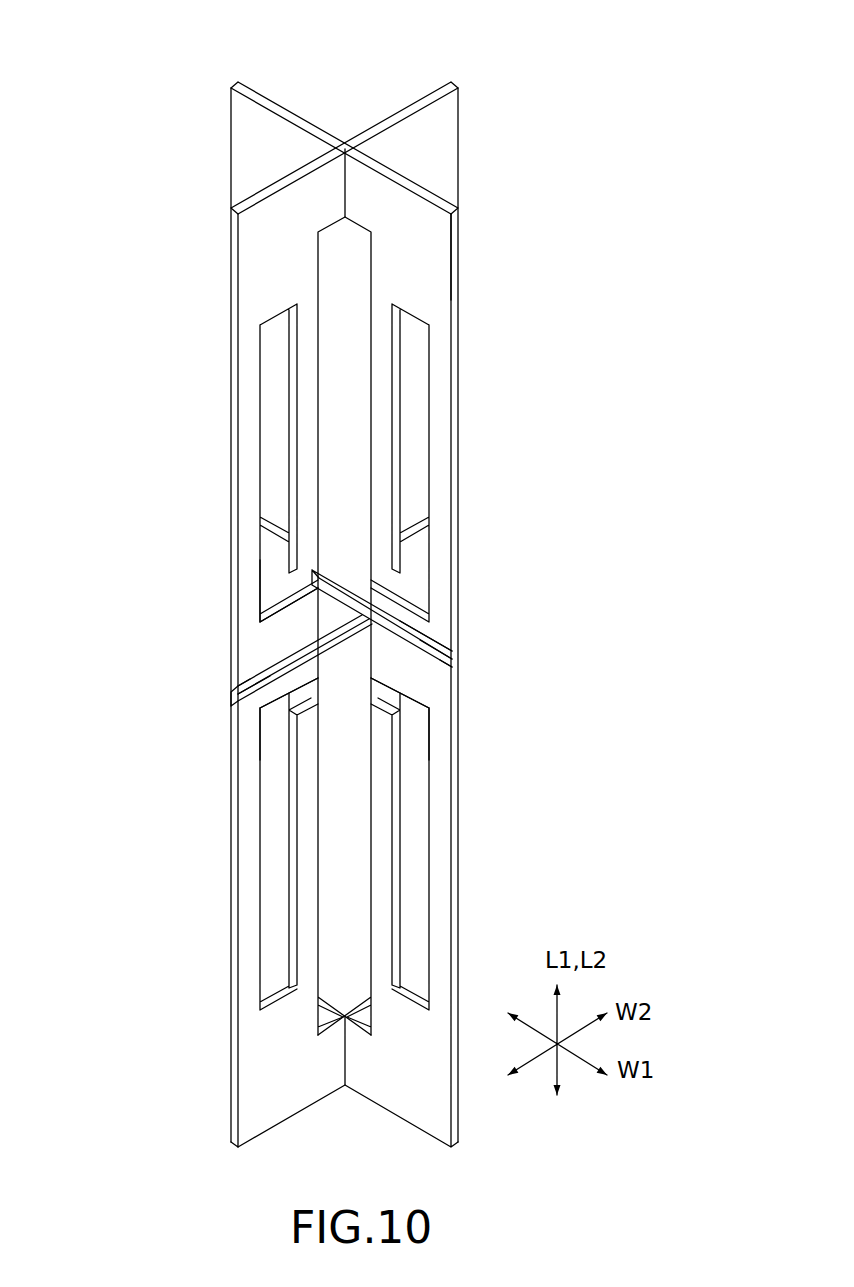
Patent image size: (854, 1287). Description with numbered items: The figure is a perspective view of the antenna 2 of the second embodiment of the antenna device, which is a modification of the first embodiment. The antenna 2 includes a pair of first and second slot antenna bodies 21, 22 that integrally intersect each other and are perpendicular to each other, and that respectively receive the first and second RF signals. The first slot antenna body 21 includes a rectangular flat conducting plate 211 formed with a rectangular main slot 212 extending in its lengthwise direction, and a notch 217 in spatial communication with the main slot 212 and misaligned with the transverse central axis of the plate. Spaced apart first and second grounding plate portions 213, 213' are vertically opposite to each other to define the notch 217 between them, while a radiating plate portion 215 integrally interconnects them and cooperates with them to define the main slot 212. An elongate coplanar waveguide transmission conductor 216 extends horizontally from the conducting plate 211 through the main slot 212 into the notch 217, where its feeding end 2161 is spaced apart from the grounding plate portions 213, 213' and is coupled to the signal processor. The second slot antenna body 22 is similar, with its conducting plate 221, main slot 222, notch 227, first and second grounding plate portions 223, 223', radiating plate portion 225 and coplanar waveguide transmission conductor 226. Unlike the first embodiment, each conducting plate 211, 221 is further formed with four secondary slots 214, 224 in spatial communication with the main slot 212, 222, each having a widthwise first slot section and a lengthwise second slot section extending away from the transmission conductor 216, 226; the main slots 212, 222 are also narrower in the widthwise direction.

The antenna 2 is at (176, 52).
The first slot antenna body 21 is at (283, 102).
The second slot antenna body 22 is at (408, 102).
The conducting plate 211 is at (230, 124).
The conducting plate 221 is at (460, 124).
The radiating plate portion 215 is at (235, 166).
The radiating plate portion 225 is at (454, 166).
The main slot 212 is at (355, 245).
The main slot 222 is at (335, 245).
The secondary slot 214 is at (412, 392).
The secondary slot 224 is at (278, 425).
The coplanar waveguide transmission conductor 216 is at (343, 588).
The coplanar waveguide transmission conductor 226 is at (343, 632).
The first grounding plate portion 213 is at (475, 611).
The first grounding plate portion 223 is at (229, 728).
The second grounding plate portion 213' is at (464, 728).
The second grounding plate portion 223' is at (229, 608).
The notch 217 is at (455, 653).
The notch 227 is at (237, 705).
The feeding end 2161 is at (232, 692).